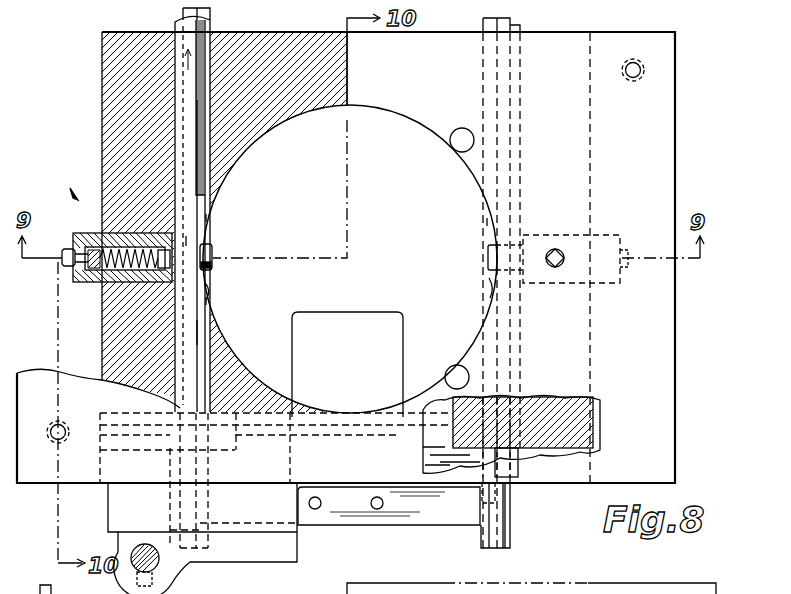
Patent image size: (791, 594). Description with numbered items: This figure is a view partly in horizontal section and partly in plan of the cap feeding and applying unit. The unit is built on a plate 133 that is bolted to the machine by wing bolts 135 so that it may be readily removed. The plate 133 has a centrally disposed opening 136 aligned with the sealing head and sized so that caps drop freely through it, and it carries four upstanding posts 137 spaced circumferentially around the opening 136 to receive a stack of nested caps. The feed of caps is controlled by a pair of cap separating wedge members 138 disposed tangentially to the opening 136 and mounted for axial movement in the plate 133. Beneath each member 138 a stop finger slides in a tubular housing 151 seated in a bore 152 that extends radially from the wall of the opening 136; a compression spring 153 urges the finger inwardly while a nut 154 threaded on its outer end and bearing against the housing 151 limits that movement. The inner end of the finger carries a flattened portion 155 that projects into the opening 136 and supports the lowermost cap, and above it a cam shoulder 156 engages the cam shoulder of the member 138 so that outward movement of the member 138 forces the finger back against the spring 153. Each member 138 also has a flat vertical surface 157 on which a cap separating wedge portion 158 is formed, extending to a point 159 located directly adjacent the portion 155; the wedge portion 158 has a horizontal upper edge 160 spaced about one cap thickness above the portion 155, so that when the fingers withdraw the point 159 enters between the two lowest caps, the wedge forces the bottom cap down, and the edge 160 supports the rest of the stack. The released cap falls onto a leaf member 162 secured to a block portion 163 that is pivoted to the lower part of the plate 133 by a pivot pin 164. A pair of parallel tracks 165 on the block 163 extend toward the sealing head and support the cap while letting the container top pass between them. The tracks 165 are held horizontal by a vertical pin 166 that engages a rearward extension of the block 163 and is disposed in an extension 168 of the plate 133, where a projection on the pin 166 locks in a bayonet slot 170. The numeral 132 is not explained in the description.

The frame 132 is at (652, 588).
The plate 133 is at (645, 106).
The wing bolts 135 is at (40, 590).
The centrally disposed opening 136 is at (450, 588).
The upstanding posts 137 is at (462, 129).
The cap separating wedge members 138 is at (183, 128).
The tubular housing 151 is at (80, 233).
The bore 152 is at (93, 283).
The compression spring 153 is at (82, 282).
The nut 154 is at (68, 258).
The flattened portion 155 is at (212, 252).
The cam shoulder 156 is at (190, 242).
The flat vertical surface 157 is at (200, 180).
The cap separating wedge portion 158 is at (212, 293).
The point 159 is at (213, 268).
The upper edge 160 is at (200, 332).
The leaf member 162 is at (387, 338).
The block portion 163 is at (430, 508).
The pivot pin 164 is at (377, 433).
The parallel tracks 165 is at (206, 218).
The pin 166 is at (145, 545).
The extension 168 is at (240, 547).
The bayonet slot 170 is at (153, 575).